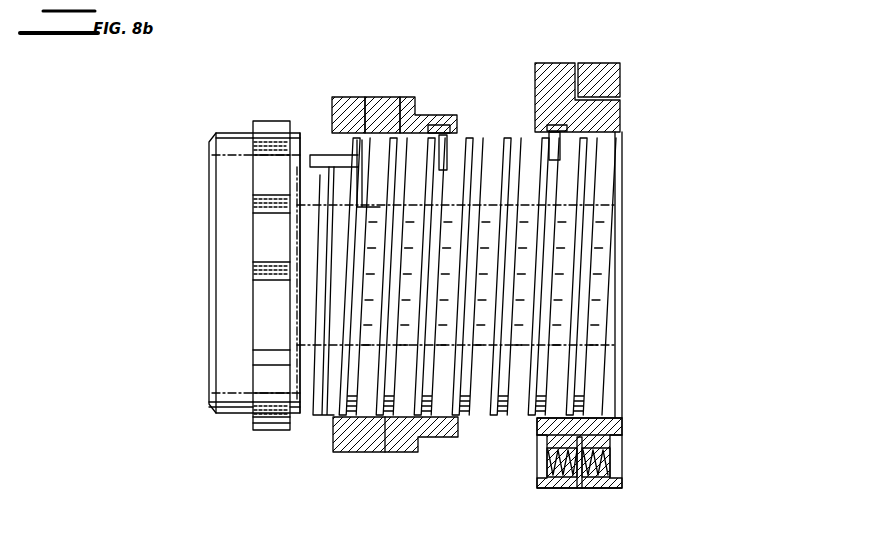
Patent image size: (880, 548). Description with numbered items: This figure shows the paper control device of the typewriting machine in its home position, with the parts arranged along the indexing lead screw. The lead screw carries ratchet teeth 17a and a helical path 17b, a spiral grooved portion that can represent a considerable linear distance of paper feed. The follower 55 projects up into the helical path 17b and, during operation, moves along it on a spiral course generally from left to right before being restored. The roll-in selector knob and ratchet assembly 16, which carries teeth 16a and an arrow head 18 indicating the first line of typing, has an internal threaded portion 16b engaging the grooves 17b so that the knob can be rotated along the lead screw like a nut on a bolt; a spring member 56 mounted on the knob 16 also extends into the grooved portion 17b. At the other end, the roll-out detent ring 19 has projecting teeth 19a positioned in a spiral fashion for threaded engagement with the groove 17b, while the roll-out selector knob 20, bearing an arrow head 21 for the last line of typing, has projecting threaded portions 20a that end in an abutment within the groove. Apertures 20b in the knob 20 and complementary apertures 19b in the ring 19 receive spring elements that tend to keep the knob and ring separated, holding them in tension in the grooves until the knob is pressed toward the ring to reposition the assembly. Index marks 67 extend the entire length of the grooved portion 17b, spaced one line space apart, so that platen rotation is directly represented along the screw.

The roll-in selector knob and ratchet assembly 16 is at (427, 117).
The teeth 16a is at (360, 100).
The internal threaded portion 16b is at (370, 132).
The ratchet teeth 17a is at (268, 421).
The helical path 17b is at (477, 272).
The arrow head 18 is at (440, 126).
The roll-out detent ring 19 is at (612, 83).
The projecting teeth 19a is at (583, 420).
The apertures 19b is at (602, 473).
The roll-out selector knob 20 is at (547, 77).
The projecting threaded portions 20a is at (565, 148).
The apertures 20b is at (578, 468).
The arrow head 21 is at (553, 125).
The follower 55 is at (353, 172).
The spring member 56 is at (440, 148).
The index marks 67 is at (478, 378).